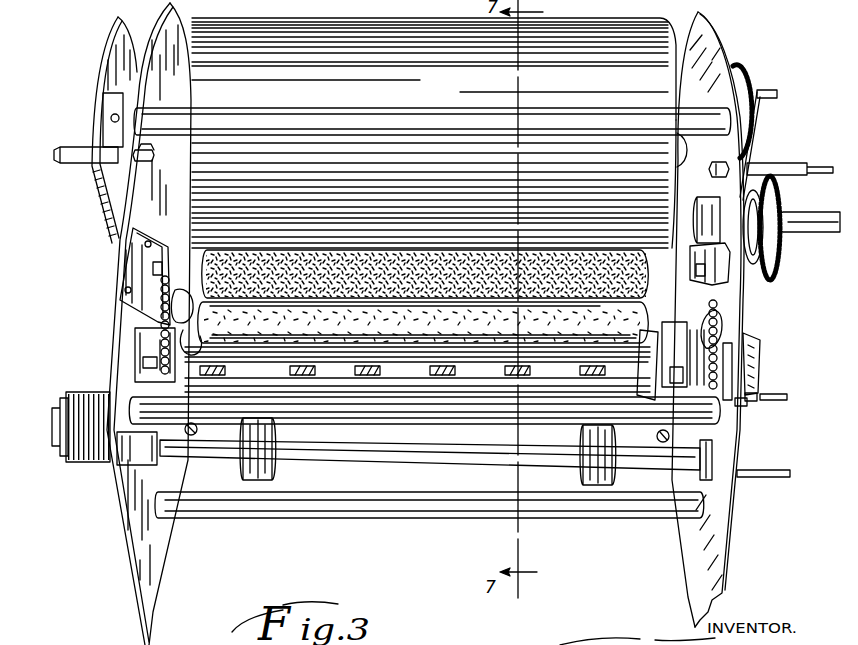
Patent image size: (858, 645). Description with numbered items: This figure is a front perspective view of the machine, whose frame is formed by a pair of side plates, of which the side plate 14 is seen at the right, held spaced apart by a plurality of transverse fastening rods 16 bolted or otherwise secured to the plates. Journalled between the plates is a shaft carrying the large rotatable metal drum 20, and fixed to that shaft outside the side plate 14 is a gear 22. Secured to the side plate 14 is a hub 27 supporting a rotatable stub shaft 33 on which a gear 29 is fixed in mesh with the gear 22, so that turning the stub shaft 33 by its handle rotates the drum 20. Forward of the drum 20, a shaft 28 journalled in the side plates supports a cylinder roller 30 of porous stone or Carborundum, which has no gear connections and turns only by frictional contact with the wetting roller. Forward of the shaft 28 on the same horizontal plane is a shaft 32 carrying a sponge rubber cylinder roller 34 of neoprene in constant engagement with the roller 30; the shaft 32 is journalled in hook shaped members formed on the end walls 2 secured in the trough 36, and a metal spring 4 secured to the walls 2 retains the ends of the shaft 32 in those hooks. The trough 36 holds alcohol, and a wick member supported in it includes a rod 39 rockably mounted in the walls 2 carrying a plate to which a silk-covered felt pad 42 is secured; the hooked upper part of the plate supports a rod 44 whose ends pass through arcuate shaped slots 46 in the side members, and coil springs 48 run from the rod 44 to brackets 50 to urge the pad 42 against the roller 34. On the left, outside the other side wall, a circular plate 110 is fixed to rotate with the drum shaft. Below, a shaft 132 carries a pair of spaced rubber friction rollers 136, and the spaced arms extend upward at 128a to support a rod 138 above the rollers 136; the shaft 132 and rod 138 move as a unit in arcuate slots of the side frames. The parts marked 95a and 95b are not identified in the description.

The circular plate 110 is at (110, 36).
The rotatable metal drum 20 is at (638, 47).
The side plate 14 is at (720, 38).
The gear 22 is at (750, 80).
The transverse fastening rods 16 is at (408, 125).
The hub 27 is at (746, 222).
The stub shaft 33 is at (823, 221).
The gear 29 is at (780, 253).
The cylinder roller 30 is at (612, 262).
The shaft 28 is at (653, 287).
The sponge rubber cylinder roller 34 is at (597, 316).
The shaft 32 is at (648, 330).
The bracket 50 is at (692, 312).
The metal spring 4 is at (187, 292).
The coil springs 48 is at (140, 326).
The arcuate shaped slots 46 is at (728, 363).
The rod 44 is at (773, 394).
The stud 95b is at (747, 392).
The stud 95a is at (753, 402).
The rod 39 is at (187, 352).
The upward extension of spaced arms 128a is at (97, 392).
The end walls 2 is at (173, 345).
The pad 42 is at (390, 375).
The rubber friction rollers 136 is at (257, 462).
The shaft 132 is at (340, 455).
The rod 138 is at (415, 425).
The trough 36 is at (650, 400).